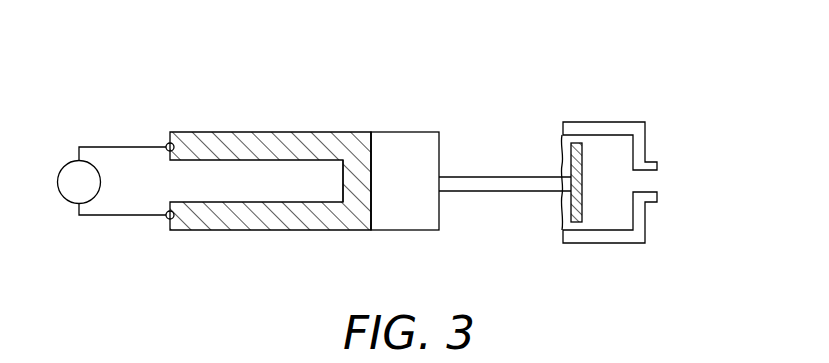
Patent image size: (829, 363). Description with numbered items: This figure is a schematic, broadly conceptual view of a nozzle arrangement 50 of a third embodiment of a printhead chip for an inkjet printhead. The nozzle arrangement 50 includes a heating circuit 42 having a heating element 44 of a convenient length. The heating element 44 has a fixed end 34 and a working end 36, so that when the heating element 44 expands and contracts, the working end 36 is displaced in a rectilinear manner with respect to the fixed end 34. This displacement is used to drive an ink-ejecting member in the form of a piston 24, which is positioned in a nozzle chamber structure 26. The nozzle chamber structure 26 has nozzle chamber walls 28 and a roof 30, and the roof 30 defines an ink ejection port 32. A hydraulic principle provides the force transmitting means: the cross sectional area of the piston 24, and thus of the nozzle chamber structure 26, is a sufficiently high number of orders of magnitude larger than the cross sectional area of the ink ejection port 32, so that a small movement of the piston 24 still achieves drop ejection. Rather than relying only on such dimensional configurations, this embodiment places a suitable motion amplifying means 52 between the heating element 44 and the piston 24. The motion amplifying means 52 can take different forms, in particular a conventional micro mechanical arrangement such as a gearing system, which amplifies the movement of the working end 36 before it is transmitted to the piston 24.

The heating circuit 42 is at (100, 146).
The fixed end 34 is at (168, 142).
The heating element 44 is at (267, 132).
The working end 36 is at (370, 132).
The motion amplifying means 52 is at (423, 132).
The nozzle arrangement 50 is at (468, 110).
The nozzle chamber walls 28 is at (622, 122).
The piston 24 is at (583, 158).
The ink ejection port 32 is at (664, 181).
The roof 30 is at (645, 225).
The nozzle chamber structure 26 is at (608, 210).